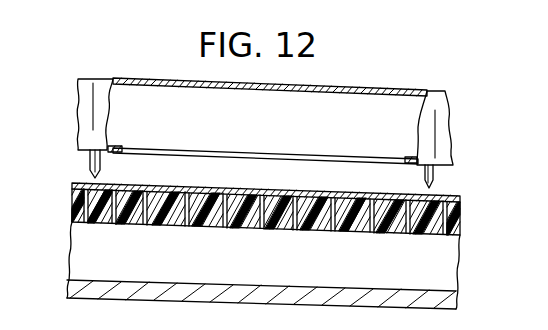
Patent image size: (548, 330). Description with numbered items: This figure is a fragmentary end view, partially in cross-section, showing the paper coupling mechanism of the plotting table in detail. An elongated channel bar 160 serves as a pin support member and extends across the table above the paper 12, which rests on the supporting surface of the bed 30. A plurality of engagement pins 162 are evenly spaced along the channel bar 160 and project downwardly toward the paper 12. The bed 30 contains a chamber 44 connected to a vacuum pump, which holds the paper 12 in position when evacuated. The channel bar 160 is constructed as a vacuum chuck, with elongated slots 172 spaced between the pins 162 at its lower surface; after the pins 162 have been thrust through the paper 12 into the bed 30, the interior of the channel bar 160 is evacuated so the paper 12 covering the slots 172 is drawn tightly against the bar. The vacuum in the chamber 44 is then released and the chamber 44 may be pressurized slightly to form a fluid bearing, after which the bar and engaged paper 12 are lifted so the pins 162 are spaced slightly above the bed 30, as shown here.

The paper 12 is at (286, 202).
The bed 30 is at (452, 213).
The chamber 44 is at (443, 270).
The channel bar 160 is at (91, 79).
The engagement pins 162 is at (95, 163).
The slots 172 is at (116, 146).